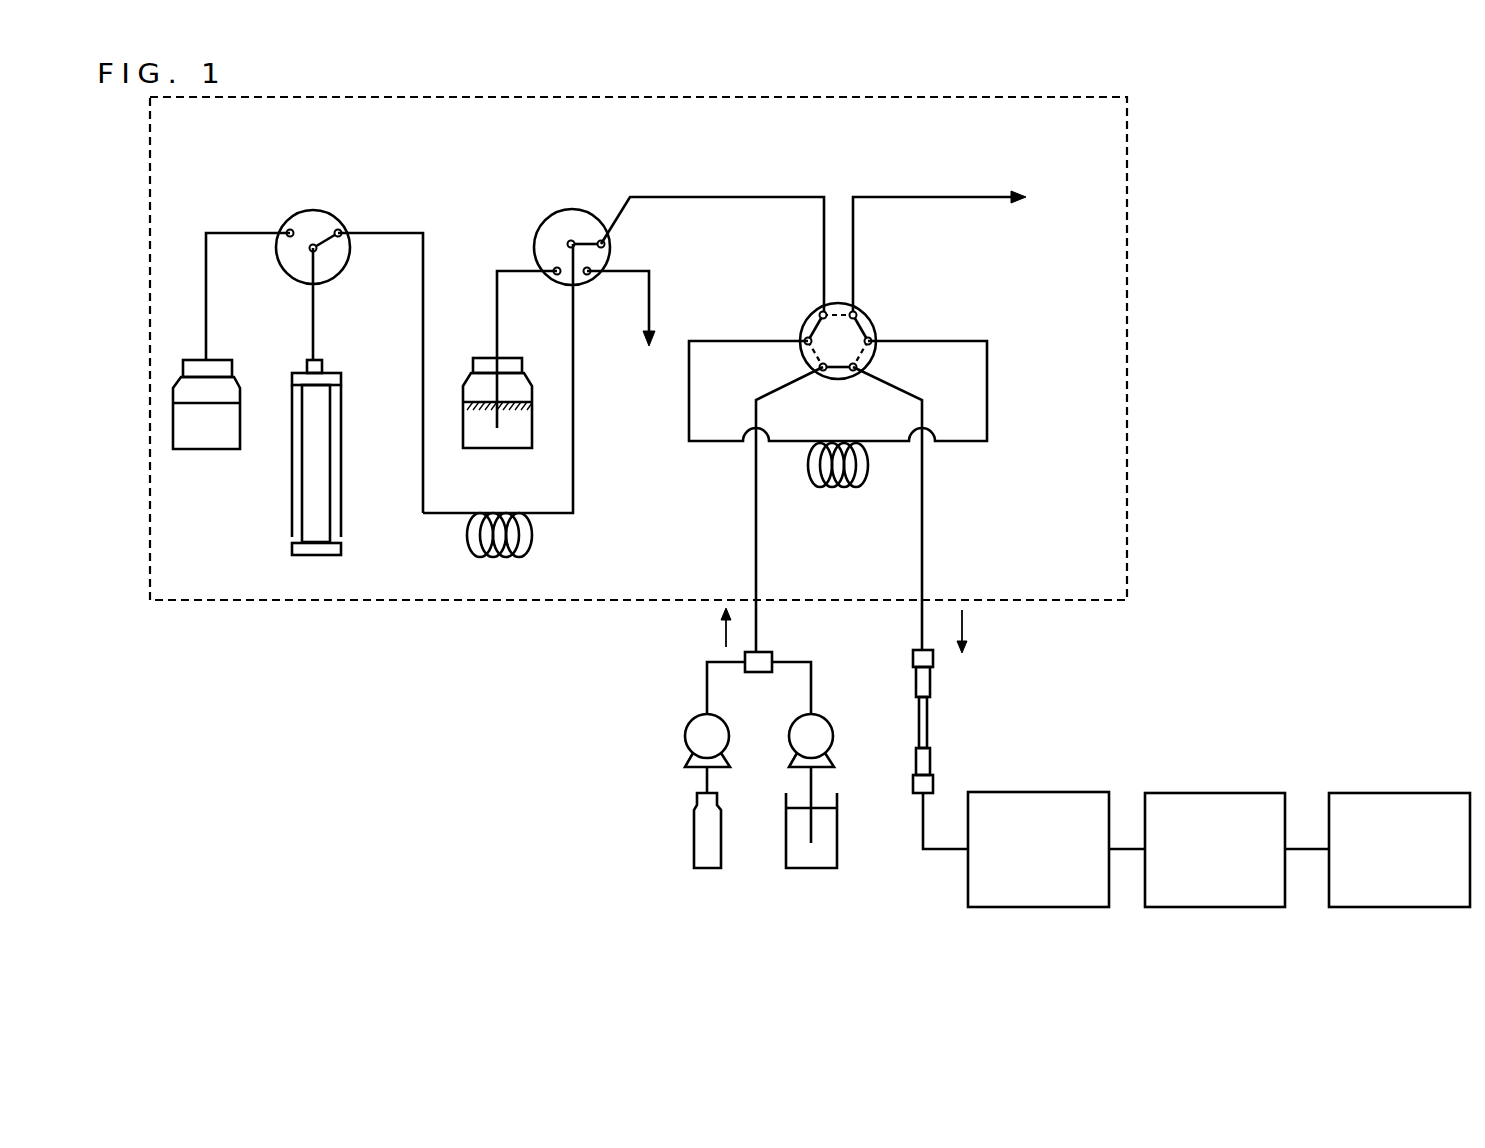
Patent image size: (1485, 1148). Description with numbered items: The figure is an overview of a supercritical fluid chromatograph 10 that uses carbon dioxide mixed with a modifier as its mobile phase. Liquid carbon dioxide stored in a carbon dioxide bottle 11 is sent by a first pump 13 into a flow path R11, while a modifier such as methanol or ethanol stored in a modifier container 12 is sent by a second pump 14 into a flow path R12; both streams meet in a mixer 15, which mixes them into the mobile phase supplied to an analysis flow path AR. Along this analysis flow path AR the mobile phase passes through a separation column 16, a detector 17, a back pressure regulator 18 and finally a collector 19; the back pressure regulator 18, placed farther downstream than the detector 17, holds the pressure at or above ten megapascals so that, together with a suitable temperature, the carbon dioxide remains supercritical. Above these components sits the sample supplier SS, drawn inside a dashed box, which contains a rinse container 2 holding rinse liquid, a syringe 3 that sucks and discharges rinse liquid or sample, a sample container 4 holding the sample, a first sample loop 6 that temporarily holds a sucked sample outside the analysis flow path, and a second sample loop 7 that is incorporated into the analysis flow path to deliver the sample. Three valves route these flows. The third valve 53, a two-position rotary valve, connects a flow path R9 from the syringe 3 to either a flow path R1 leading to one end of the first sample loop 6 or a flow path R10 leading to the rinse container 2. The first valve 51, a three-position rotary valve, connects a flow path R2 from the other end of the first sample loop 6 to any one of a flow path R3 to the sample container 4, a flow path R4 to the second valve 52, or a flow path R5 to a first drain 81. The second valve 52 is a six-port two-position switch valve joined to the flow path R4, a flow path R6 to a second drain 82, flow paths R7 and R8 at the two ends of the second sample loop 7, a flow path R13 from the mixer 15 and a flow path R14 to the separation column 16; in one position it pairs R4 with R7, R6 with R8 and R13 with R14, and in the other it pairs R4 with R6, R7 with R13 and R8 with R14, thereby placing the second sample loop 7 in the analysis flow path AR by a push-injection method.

The rinse container 2 is at (188, 452).
The syringe 3 is at (302, 557).
The sample container 4 is at (477, 448).
The first sample loop 6 is at (490, 557).
The second sample loop 7 is at (830, 488).
The supercritical fluid chromatograph 10 is at (290, 872).
The carbon dioxide bottle 11 is at (707, 870).
The modifier container 12 is at (812, 870).
The first pump 13 is at (687, 718).
The second pump 14 is at (830, 718).
The mixer 15 is at (763, 651).
The separation column 16 is at (929, 720).
The detector 17 is at (984, 792).
The back pressure regulator 18 is at (1165, 792).
The collector 19 is at (1343, 792).
The first valve 51 is at (575, 210).
The second valve 52 is at (860, 315).
The third valve 53 is at (313, 210).
The first drain 81 is at (644, 348).
The second drain 82 is at (1019, 192).
The flow path R1 is at (383, 233).
The flow path R2 is at (575, 490).
The flow path R3 is at (498, 292).
The flow path R4 is at (720, 197).
The flow path R5 is at (620, 271).
The flow path R6 is at (890, 197).
The flow path R7 is at (755, 340).
The flow path R8 is at (925, 340).
The flow path R9 is at (320, 336).
The flow path R10 is at (224, 233).
The flow path R11 is at (706, 673).
The flow path R12 is at (812, 673).
The flow path R13 is at (756, 500).
The flow path R14 is at (924, 500).
The sample supplier SS is at (268, 601).
The analysis flow path AR is at (939, 864).